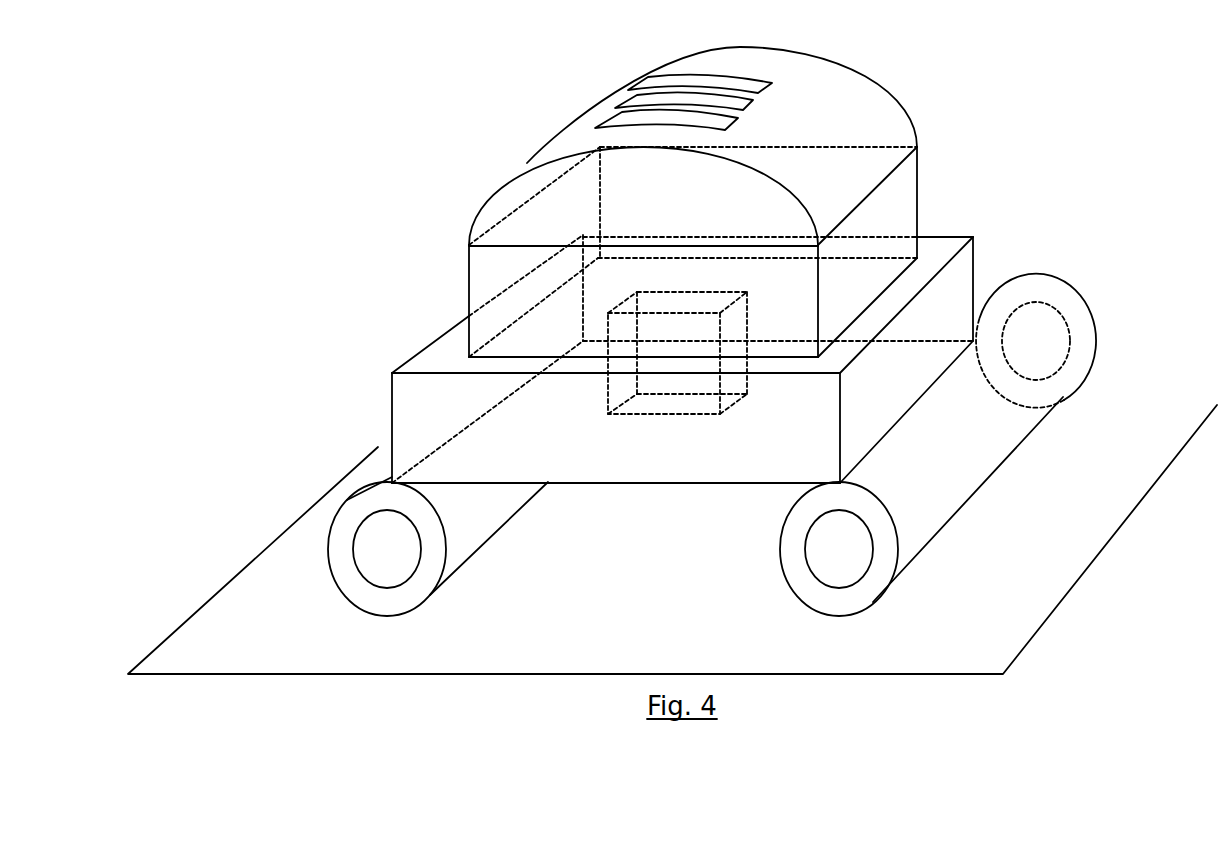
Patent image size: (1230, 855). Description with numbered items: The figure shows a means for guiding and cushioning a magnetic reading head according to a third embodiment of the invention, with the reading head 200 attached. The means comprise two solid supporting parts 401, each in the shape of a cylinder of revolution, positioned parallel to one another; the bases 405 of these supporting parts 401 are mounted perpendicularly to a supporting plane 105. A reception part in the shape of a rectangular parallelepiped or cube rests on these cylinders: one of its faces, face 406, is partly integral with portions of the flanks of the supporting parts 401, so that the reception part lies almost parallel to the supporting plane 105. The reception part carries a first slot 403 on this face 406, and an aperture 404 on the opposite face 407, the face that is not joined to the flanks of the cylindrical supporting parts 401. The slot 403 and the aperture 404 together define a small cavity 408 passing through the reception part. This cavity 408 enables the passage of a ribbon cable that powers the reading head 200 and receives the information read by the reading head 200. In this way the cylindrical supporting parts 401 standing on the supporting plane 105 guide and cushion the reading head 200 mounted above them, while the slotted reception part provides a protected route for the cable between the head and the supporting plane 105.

The supporting plane 105 is at (233, 617).
The reading head 200 is at (917, 157).
The solid supporting parts 401 is at (482, 545).
The first slot 403 is at (668, 415).
The aperture 404 is at (692, 290).
The bases 405 is at (347, 553).
The face 406 is at (758, 484).
The face 407 is at (933, 248).
The small cavity 408 is at (738, 365).